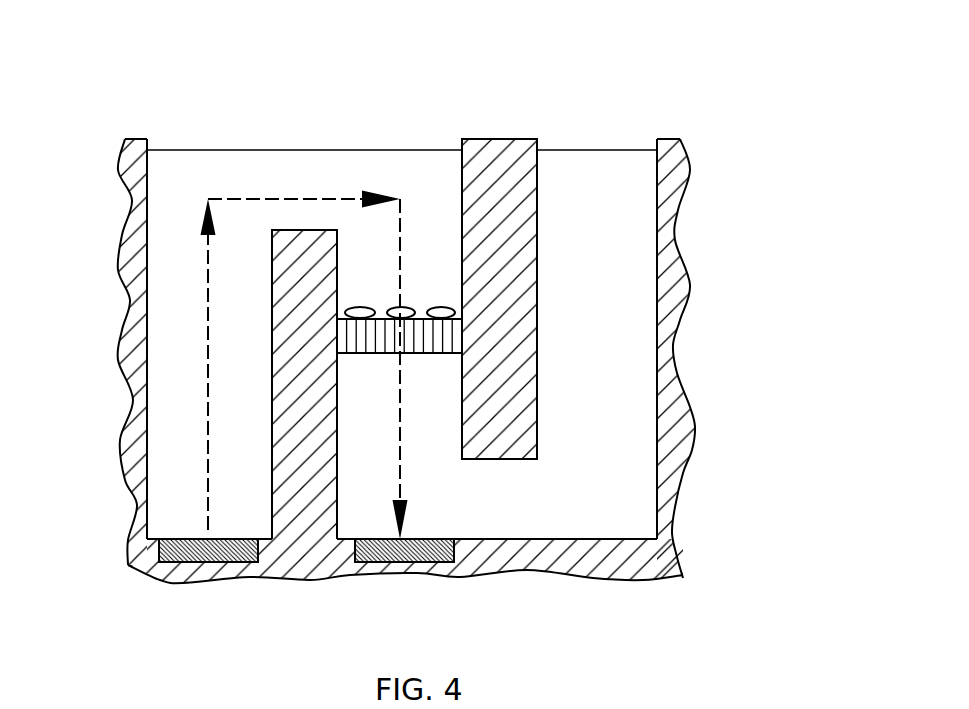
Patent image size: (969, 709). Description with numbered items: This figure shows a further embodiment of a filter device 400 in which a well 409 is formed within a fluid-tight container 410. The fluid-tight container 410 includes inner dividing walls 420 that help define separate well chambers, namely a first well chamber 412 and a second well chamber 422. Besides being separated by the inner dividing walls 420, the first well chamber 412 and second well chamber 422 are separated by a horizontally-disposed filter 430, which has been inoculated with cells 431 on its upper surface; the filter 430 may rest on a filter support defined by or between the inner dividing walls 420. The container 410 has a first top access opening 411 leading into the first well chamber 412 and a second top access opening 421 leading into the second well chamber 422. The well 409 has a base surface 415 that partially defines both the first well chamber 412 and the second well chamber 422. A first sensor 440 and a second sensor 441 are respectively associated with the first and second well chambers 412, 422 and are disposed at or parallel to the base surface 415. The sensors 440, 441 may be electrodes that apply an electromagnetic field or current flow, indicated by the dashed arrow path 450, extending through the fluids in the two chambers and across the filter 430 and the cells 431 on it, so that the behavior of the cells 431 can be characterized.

The filter device 400 is at (163, 61).
The well 409 is at (415, 140).
The fluid-tight container 410 is at (680, 200).
The first top access opening 411 is at (287, 150).
The first well chamber 412 is at (165, 343).
The base surface 415 is at (140, 508).
The inner dividing walls 420 is at (497, 139).
The second top access opening 421 is at (585, 148).
The second well chamber 422 is at (640, 447).
The horizontally-disposed filter 430 is at (453, 339).
The cells 431 is at (408, 306).
The first sensor 440 is at (193, 562).
The second sensor 441 is at (432, 562).
The flow path 450 is at (206, 252).